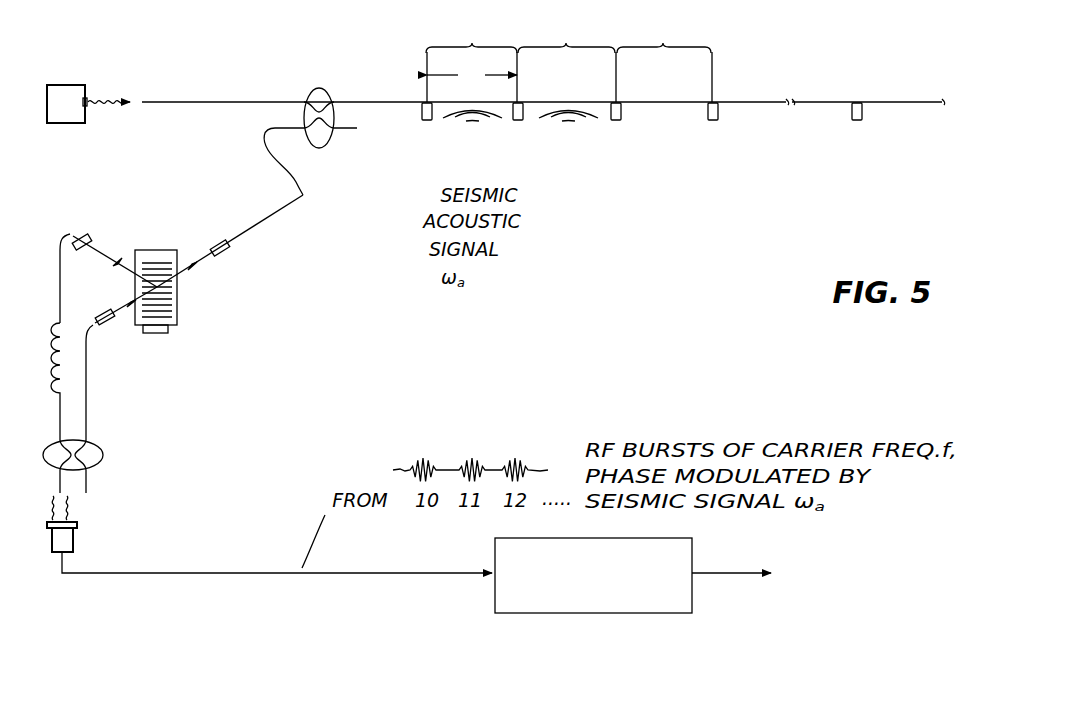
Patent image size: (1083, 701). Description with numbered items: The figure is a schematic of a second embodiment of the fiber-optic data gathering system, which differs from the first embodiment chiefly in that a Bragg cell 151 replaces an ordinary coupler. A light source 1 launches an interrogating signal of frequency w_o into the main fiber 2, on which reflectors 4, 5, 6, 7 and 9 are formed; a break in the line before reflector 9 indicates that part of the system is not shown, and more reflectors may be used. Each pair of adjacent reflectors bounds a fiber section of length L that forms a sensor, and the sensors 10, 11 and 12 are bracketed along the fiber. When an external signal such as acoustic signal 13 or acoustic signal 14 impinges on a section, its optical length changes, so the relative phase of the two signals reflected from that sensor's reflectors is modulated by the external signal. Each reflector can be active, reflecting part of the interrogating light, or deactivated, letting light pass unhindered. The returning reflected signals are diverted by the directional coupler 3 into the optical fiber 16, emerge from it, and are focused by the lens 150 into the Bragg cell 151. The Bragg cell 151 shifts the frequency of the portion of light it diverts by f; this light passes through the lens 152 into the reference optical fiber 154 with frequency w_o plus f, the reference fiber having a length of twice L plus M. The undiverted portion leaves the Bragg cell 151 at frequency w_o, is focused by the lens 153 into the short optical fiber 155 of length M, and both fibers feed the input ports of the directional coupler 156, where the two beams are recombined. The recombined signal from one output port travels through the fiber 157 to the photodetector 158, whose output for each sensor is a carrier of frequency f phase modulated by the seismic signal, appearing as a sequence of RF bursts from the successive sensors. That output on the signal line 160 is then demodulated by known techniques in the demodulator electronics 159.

The main optical fiber 1 is at (67, 123).
The main fiber 2 is at (203, 101).
The directional coupler 3 is at (313, 90).
The reflector 4 is at (422, 118).
The reflector 5 is at (523, 116).
The reflector 6 is at (621, 116).
The reflector 7 is at (718, 116).
The reflector 9 is at (862, 116).
The sensor 10 is at (471, 61).
The sensor 11 is at (566, 61).
The fiber section 12 is at (664, 61).
The acoustic signal 13 is at (470, 122).
The acoustic signal 14 is at (572, 122).
The optical fiber 16 is at (268, 152).
The lens 150 is at (232, 252).
The Bragg cell 151 is at (165, 250).
The lens 152 is at (75, 236).
The lens 153 is at (108, 325).
The reference optical fiber 154 is at (61, 290).
The short optical fiber 155 is at (92, 418).
The directional coupler 156 is at (103, 460).
The fiber 157 is at (63, 485).
The photodetector 158 is at (77, 543).
The demodulator electronics 159 is at (692, 602).
The signal line 160 is at (336, 580).